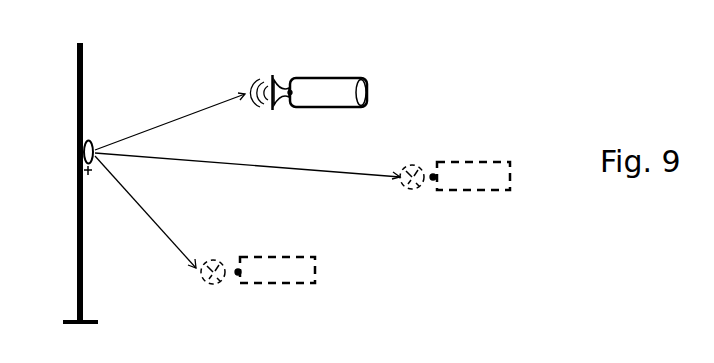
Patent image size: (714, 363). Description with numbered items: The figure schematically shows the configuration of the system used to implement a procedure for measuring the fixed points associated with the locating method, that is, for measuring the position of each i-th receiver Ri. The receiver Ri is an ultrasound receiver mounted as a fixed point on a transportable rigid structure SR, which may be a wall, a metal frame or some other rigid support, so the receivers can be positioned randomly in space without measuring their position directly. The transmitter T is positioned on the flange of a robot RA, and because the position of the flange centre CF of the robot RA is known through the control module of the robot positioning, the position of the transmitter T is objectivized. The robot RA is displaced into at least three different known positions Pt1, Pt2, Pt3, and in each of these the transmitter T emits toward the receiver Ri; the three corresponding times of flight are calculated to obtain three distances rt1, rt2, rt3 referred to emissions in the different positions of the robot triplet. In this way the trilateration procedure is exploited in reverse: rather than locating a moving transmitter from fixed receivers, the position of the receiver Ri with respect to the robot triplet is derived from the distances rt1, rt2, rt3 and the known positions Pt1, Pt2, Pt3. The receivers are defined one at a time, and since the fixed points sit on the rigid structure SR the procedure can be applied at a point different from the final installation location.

The transportable rigid structure SR is at (64, 182).
The i-th receiver Ri is at (92, 177).
The first distance rt1 is at (170, 121).
The second distance rt2 is at (247, 155).
The third distance rt3 is at (145, 212).
The flange centre CF is at (299, 76).
The robot RA is at (325, 85).
The transmitter T is at (312, 224).
The first position Pt1 is at (286, 109).
The second position Pt2 is at (433, 182).
The third position Pt3 is at (238, 277).